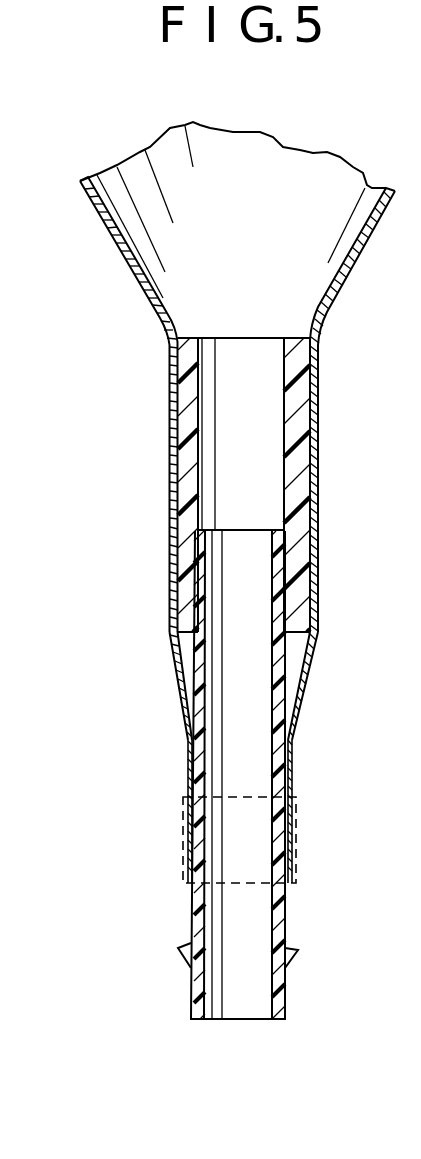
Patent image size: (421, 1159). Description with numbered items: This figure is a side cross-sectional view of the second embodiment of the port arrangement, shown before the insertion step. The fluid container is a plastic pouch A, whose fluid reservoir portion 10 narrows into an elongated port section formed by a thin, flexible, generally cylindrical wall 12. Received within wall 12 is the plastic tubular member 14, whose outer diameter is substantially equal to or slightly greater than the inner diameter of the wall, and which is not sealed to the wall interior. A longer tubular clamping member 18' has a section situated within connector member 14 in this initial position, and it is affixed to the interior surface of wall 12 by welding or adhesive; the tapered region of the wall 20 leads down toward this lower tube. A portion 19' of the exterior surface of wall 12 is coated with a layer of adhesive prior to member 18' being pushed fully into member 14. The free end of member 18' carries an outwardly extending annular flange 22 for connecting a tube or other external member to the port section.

The fluid reservoir portion 10 is at (133, 232).
The pouch A is at (143, 306).
The port section wall 12 is at (172, 398).
The tubular clamping member 14 is at (292, 440).
The tubular clamping member 18' is at (280, 775).
The adhesive-coated portion 19' is at (199, 840).
The tapered portion of sleeve 20 is at (305, 680).
The annular flange 22 is at (298, 950).